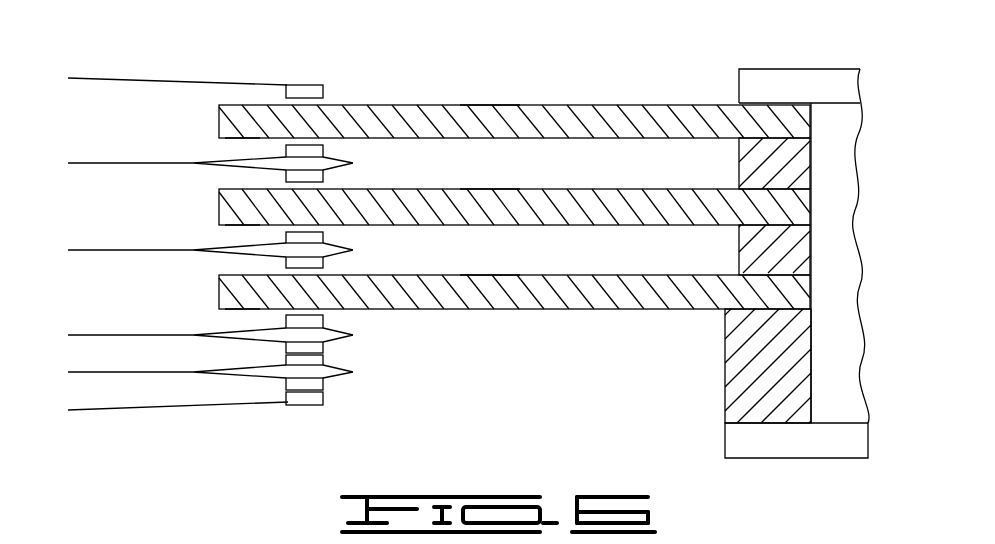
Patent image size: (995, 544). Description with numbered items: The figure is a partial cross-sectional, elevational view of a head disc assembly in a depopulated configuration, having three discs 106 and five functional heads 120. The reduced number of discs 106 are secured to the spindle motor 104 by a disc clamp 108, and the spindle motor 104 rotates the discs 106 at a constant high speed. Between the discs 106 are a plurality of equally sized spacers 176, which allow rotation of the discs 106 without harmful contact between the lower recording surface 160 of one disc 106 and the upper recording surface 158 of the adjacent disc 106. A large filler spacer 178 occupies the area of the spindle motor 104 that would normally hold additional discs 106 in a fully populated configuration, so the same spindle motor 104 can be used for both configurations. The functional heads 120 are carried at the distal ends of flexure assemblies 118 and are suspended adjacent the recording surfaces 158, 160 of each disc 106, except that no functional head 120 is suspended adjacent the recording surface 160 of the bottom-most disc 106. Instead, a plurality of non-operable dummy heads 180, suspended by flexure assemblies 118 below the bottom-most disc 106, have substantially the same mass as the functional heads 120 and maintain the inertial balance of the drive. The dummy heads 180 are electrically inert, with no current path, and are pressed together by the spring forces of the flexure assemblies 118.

The spindle motor 104 is at (843, 163).
The discs 106 is at (219, 120).
The disc clamp 108 is at (773, 72).
The flexure assembly 118 is at (167, 66).
The heads 120 is at (323, 86).
The recording surface 158 is at (488, 105).
The recording surface 160 is at (247, 138).
The spacers 176 is at (739, 167).
The filler spacer 178 is at (725, 375).
The non-operable heads 180 is at (353, 335).